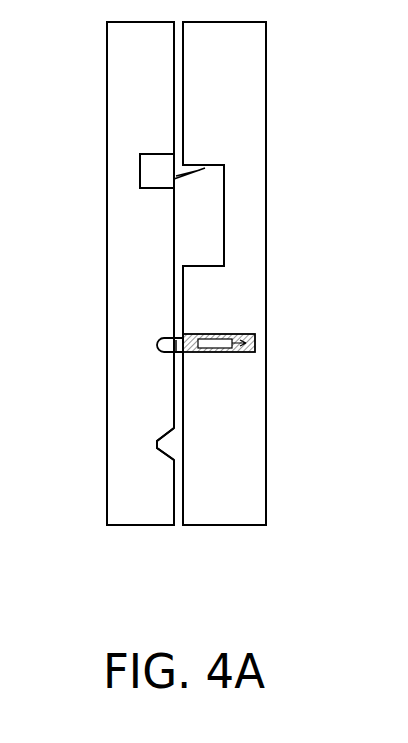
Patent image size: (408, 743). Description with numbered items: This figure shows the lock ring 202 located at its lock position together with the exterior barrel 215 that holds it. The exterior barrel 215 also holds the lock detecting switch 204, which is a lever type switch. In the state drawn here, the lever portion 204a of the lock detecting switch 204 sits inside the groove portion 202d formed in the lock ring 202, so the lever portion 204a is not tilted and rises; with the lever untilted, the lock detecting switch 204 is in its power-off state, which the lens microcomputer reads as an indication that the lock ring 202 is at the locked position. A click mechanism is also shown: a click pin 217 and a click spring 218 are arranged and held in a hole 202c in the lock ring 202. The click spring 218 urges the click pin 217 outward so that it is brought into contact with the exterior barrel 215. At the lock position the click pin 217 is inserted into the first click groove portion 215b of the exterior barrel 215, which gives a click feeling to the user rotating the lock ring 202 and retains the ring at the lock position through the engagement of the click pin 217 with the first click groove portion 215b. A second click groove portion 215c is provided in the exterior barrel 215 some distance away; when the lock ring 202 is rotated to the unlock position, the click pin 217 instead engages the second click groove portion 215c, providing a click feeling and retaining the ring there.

The lock ring 202 is at (238, 122).
The hole 202c is at (243, 341).
The groove portion 202d is at (224, 202).
The lock detecting switch 204 is at (140, 168).
The lever portion 204a is at (185, 172).
The exterior barrel 215 is at (125, 271).
The first click groove portion 215b is at (157, 343).
The second click groove portion 215c is at (157, 441).
The click pin 217 is at (184, 347).
The click spring 218 is at (243, 345).